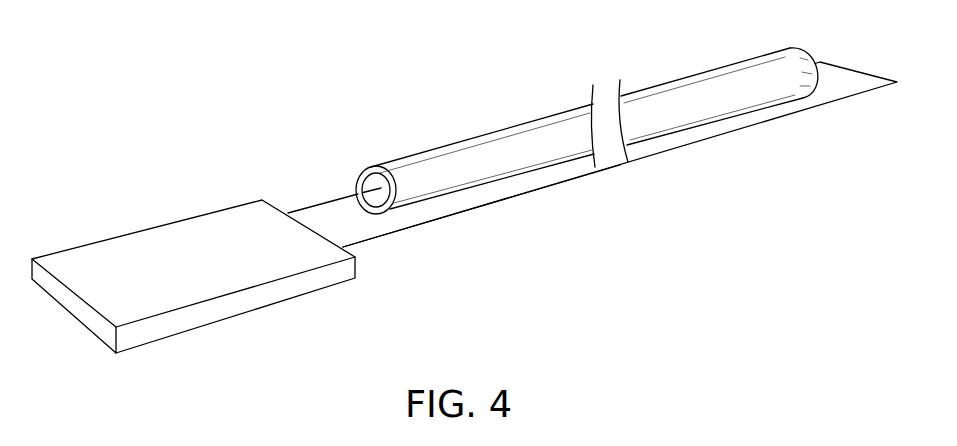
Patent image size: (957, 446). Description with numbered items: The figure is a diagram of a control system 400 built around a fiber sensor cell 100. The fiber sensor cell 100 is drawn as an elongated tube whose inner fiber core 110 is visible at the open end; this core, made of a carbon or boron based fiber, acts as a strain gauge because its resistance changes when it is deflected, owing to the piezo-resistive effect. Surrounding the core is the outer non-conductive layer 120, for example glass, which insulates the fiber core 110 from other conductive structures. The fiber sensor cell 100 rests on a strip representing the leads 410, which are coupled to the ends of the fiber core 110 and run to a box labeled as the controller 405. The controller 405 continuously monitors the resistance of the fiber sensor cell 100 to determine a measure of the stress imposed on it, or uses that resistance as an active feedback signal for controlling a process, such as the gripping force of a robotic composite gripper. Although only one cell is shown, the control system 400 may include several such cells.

The fiber sensor cell 100 is at (584, 119).
The fiber core 110 is at (370, 167).
The outer non-conductive layer 120 is at (402, 157).
The control system 400 is at (502, 212).
The controller 405 is at (232, 207).
The leads 410 is at (448, 217).